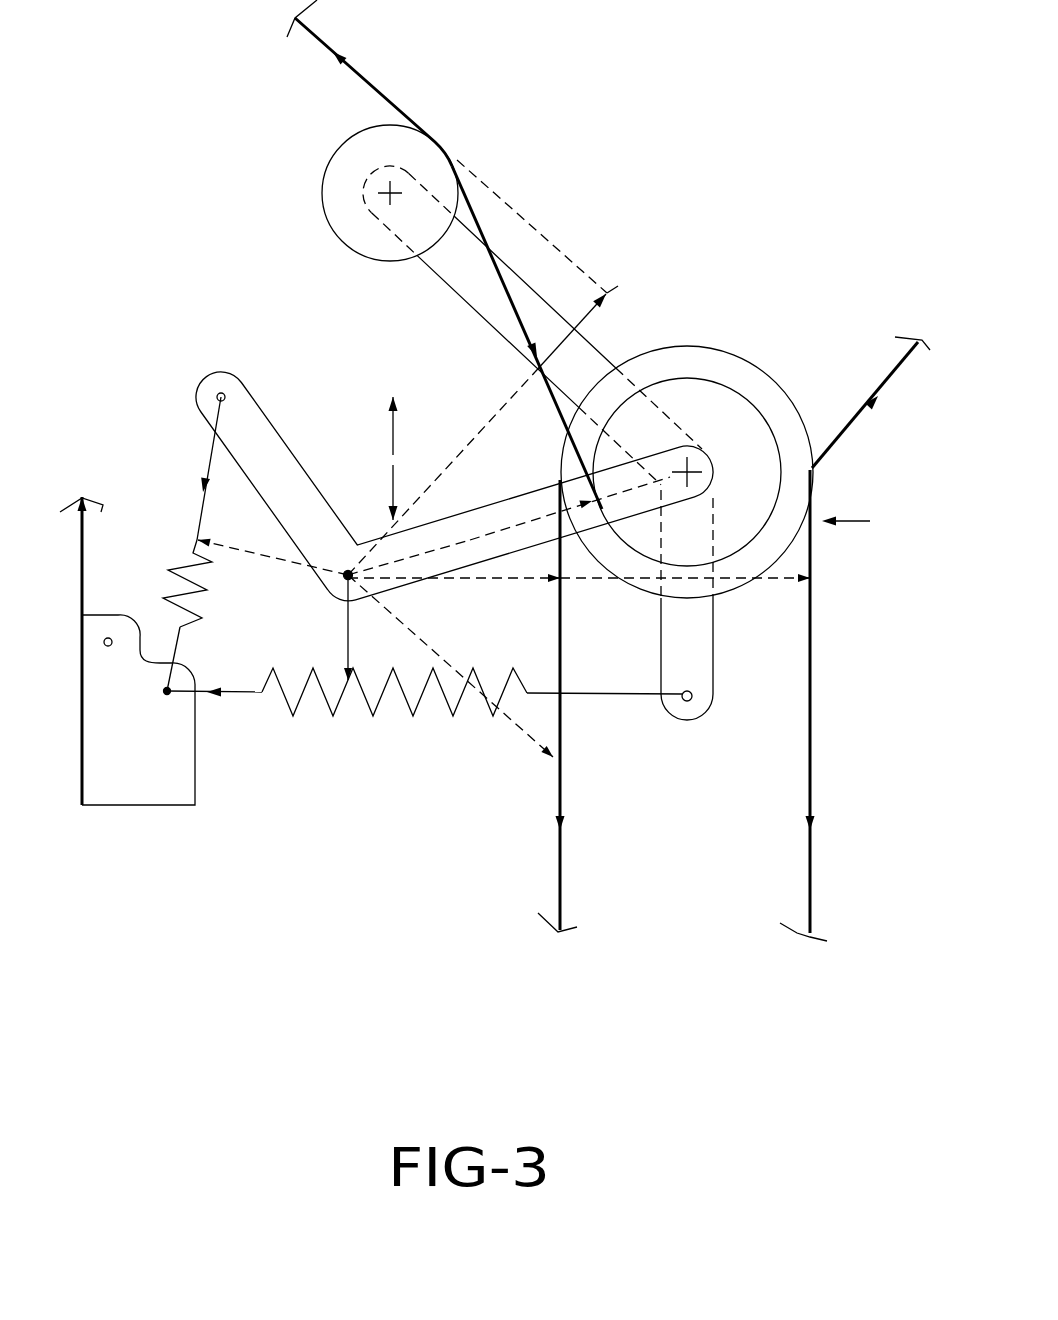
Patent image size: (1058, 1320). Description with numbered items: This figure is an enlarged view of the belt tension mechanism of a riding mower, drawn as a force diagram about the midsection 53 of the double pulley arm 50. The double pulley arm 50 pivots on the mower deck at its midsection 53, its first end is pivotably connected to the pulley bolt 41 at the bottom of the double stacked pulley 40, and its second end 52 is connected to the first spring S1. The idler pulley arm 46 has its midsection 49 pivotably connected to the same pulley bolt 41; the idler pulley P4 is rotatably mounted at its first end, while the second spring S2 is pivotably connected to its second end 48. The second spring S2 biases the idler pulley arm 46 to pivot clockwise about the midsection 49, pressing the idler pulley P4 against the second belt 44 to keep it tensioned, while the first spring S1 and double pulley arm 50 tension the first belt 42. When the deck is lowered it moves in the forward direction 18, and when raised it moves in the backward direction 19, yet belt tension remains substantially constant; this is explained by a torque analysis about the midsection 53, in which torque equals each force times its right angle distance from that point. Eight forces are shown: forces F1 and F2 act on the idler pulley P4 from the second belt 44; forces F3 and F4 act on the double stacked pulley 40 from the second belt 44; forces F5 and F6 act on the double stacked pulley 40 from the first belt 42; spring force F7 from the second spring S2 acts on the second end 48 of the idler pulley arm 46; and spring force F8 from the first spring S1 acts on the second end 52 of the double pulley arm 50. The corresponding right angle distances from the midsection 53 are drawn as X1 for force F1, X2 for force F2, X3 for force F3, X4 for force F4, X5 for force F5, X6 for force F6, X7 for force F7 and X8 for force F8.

The idler pulley P4 is at (343, 218).
The second belt 44 is at (512, 318).
The idler pulley arm 46 is at (580, 358).
The pulley bolt 41 is at (688, 468).
The midsection of the idler pulley arm 49 is at (698, 452).
The double pulley arm 50 is at (263, 432).
The second end of the double pulley arm 52 is at (221, 372).
The midsection of the double pulley arm 53 is at (340, 578).
The second end of the idler pulley arm 48 is at (685, 712).
The double stacked pulley 40 is at (869, 522).
The first belt 42 is at (812, 708).
The forward direction 18 is at (393, 432).
The backward direction 19 is at (393, 488).
The first spring S1 is at (178, 568).
The second spring S2 is at (372, 716).
The force F1 is at (356, 70).
The force F2 is at (492, 257).
The force F3 is at (538, 348).
The force F4 is at (857, 418).
The force F5 is at (565, 796).
The force F6 is at (816, 796).
The spring force F7 is at (250, 696).
The spring force F8 is at (213, 446).
The right angle distance X1 is at (441, 473).
The right angle distance X2 is at (409, 555).
The right angle distance X3 is at (565, 517).
The right angle distance X4 is at (450, 666).
The right angle distance X5 is at (458, 582).
The right angle distance X6 is at (736, 582).
The right angle distance X7 is at (346, 629).
The right angle distance X8 is at (273, 557).